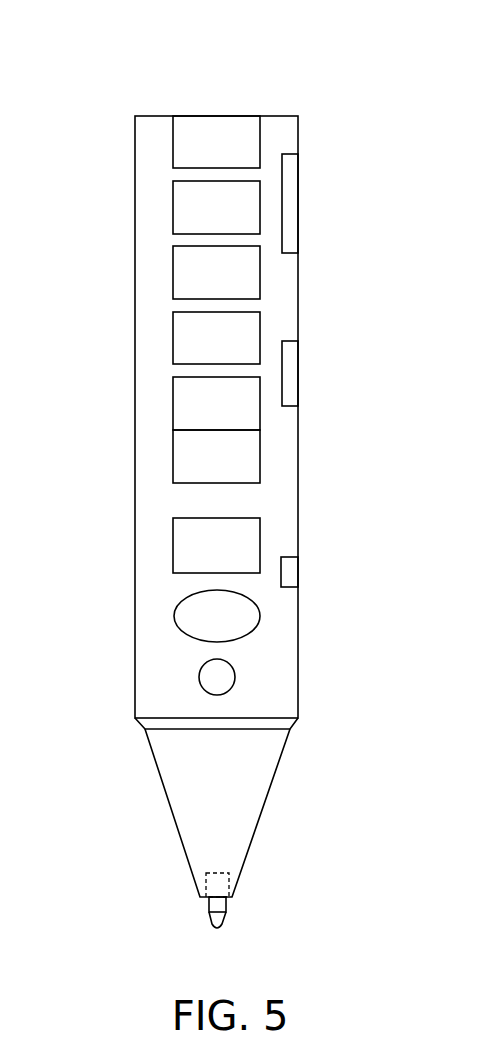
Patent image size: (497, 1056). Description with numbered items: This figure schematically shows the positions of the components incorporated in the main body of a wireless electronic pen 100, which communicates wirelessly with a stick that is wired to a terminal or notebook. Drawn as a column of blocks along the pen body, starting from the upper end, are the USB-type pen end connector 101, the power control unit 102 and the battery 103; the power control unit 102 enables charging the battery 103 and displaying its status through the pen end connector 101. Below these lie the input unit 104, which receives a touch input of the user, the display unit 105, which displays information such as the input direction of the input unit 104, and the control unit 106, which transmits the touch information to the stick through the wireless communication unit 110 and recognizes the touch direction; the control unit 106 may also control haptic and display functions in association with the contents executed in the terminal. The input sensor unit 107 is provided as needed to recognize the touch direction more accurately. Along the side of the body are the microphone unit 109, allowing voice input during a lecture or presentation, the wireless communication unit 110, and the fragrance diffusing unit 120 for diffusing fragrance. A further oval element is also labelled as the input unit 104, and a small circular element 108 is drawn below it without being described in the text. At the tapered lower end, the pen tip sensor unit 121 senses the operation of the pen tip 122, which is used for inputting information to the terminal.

The wireless electronic pen 100 is at (283, 116).
The USB-type pen end connector 101 is at (173, 145).
The power control unit 102 is at (173, 210).
The battery 103 is at (173, 275).
The input unit 104 is at (173, 340).
The display unit 105 is at (173, 405).
The control unit 106 is at (173, 460).
The input sensor unit 107 is at (173, 546).
The button 108 is at (205, 679).
The microphone unit 109 is at (291, 213).
The wireless communication unit 110 is at (291, 376).
The fragrance diffusing unit 120 is at (291, 573).
The pen tip sensor unit 121 is at (230, 887).
The pen tip 122 is at (222, 923).